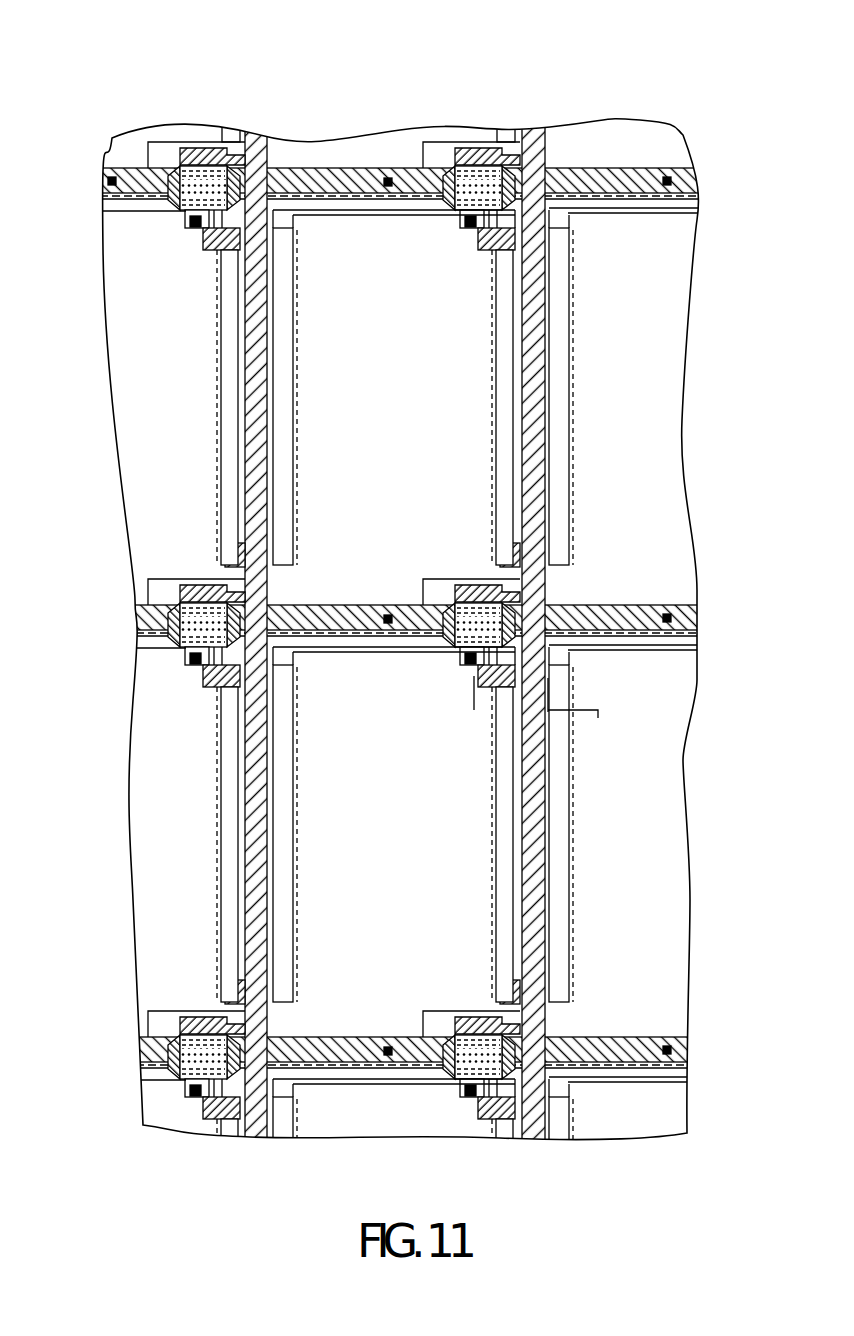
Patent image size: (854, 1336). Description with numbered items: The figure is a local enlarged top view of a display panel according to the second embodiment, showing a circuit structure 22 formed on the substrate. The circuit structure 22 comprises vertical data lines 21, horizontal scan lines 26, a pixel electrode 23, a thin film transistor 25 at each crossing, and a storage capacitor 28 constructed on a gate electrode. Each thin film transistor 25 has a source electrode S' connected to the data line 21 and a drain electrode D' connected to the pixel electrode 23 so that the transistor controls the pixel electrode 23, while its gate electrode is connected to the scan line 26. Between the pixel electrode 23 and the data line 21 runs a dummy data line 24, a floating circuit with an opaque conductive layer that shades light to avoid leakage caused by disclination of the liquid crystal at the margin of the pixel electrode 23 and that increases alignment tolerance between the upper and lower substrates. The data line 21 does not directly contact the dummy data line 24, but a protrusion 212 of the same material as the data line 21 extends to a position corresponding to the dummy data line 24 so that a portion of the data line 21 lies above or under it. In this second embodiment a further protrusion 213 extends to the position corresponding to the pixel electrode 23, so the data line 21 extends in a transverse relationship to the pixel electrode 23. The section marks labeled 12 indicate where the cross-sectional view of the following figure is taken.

The data line 21 is at (257, 140).
The circuit structure 22 is at (378, 93).
The pixel electrode 23 is at (370, 222).
The dummy data line 24 is at (502, 353).
The thin film transistor 25 is at (508, 96).
The scan line 26 is at (157, 140).
The storage capacitor 28 is at (332, 595).
The protrusion 212 is at (515, 553).
The protrusion 213 is at (502, 240).
The source electrode S' is at (350, 531).
The drain electrode D' is at (341, 653).
The section line 12- 12 is at (537, 717).